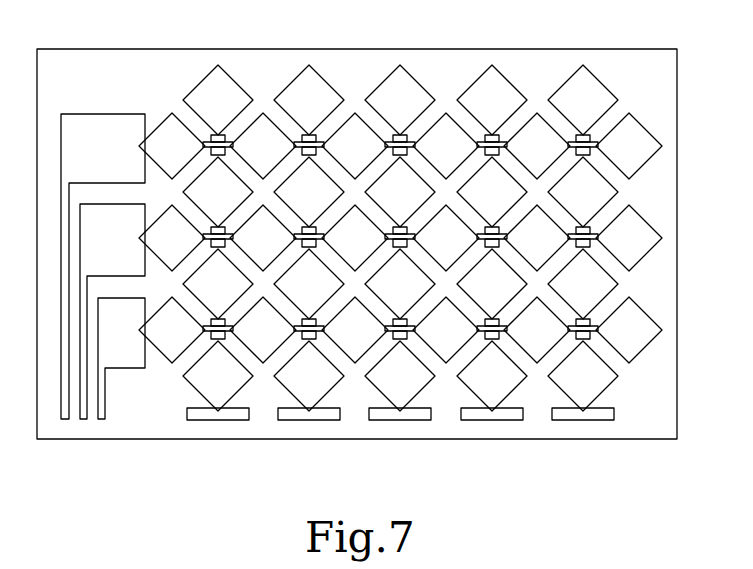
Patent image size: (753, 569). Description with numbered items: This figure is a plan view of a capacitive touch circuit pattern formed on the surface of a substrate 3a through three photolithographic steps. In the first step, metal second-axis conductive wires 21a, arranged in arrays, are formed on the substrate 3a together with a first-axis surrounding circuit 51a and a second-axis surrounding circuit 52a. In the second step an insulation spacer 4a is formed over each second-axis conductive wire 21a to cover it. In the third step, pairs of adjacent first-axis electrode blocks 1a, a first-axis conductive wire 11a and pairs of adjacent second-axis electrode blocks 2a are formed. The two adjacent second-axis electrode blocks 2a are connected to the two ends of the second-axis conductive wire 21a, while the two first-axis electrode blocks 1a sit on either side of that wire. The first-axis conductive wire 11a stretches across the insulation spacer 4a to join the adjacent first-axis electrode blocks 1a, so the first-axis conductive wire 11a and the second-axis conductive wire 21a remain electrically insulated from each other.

The first-axis electrode block 1a is at (167, 133).
The second-axis electrode block 2a is at (205, 87).
The substrate 3a is at (538, 423).
The insulation spacer 4a is at (210, 139).
The first-axis conductive wire 11a is at (212, 148).
The second-axis conductive wire 21a is at (221, 138).
The first-axis surrounding circuit 51a is at (87, 125).
The second-axis surrounding circuit 52a is at (290, 421).